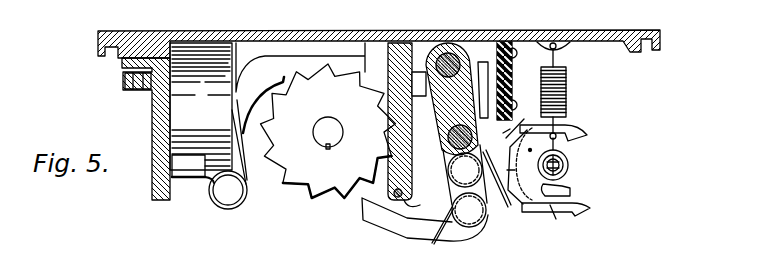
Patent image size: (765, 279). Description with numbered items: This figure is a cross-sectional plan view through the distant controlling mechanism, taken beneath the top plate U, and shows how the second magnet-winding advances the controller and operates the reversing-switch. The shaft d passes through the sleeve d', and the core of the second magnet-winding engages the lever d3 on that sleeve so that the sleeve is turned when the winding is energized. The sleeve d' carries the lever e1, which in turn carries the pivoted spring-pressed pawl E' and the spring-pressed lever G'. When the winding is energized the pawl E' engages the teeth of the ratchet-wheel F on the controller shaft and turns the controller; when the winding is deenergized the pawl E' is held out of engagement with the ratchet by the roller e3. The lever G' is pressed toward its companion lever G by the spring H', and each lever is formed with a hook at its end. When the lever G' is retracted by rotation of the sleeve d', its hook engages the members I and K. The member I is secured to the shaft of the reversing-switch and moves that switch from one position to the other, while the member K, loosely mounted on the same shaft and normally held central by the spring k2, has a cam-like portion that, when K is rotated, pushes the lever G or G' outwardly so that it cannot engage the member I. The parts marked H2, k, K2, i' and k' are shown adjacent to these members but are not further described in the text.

The top plate U is at (247, 31).
The ratchet-wheel F is at (312, 204).
The sleeve d' is at (445, 99).
The shaft d is at (479, 83).
The lever d3 is at (448, 142).
The lever e1 is at (462, 191).
The roller e3 is at (409, 203).
The spring-pressed pawl E' is at (425, 230).
The bracket H2 is at (497, 135).
The link k is at (518, 121).
The spring K2 is at (567, 84).
The spring-pressed lever G is at (557, 121).
The spring k2 is at (503, 171).
The member K is at (571, 168).
The stop i' is at (565, 185).
The spring H' is at (497, 185).
The member I is at (517, 179).
The link k' is at (557, 222).
The spring-pressed lever G' is at (563, 218).